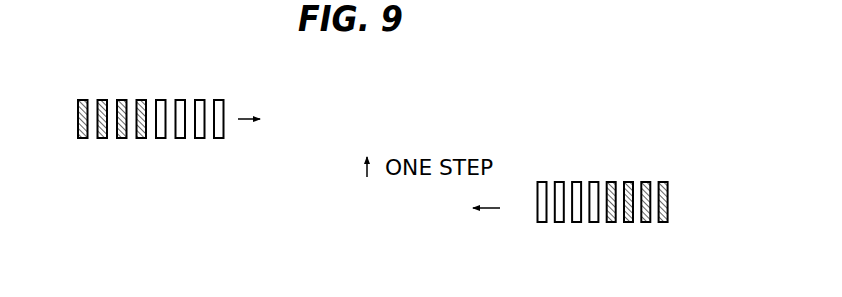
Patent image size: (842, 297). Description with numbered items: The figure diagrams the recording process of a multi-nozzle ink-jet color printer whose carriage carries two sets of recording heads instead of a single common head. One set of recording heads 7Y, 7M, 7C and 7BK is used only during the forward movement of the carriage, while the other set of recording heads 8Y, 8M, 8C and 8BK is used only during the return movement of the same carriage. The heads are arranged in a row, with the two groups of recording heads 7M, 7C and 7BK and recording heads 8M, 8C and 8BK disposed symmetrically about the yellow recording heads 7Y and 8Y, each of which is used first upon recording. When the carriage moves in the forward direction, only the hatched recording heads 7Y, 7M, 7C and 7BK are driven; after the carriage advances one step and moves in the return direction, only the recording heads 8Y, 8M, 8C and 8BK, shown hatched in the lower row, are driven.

The recording head 7BK is at (82, 100).
The recording head 7C is at (102, 100).
The recording head 7M is at (121, 100).
The recording head 7Y is at (141, 100).
The recording head 8Y is at (162, 100).
The recording head 8M is at (182, 100).
The recording head 8C is at (200, 100).
The recording head 8BK is at (222, 105).